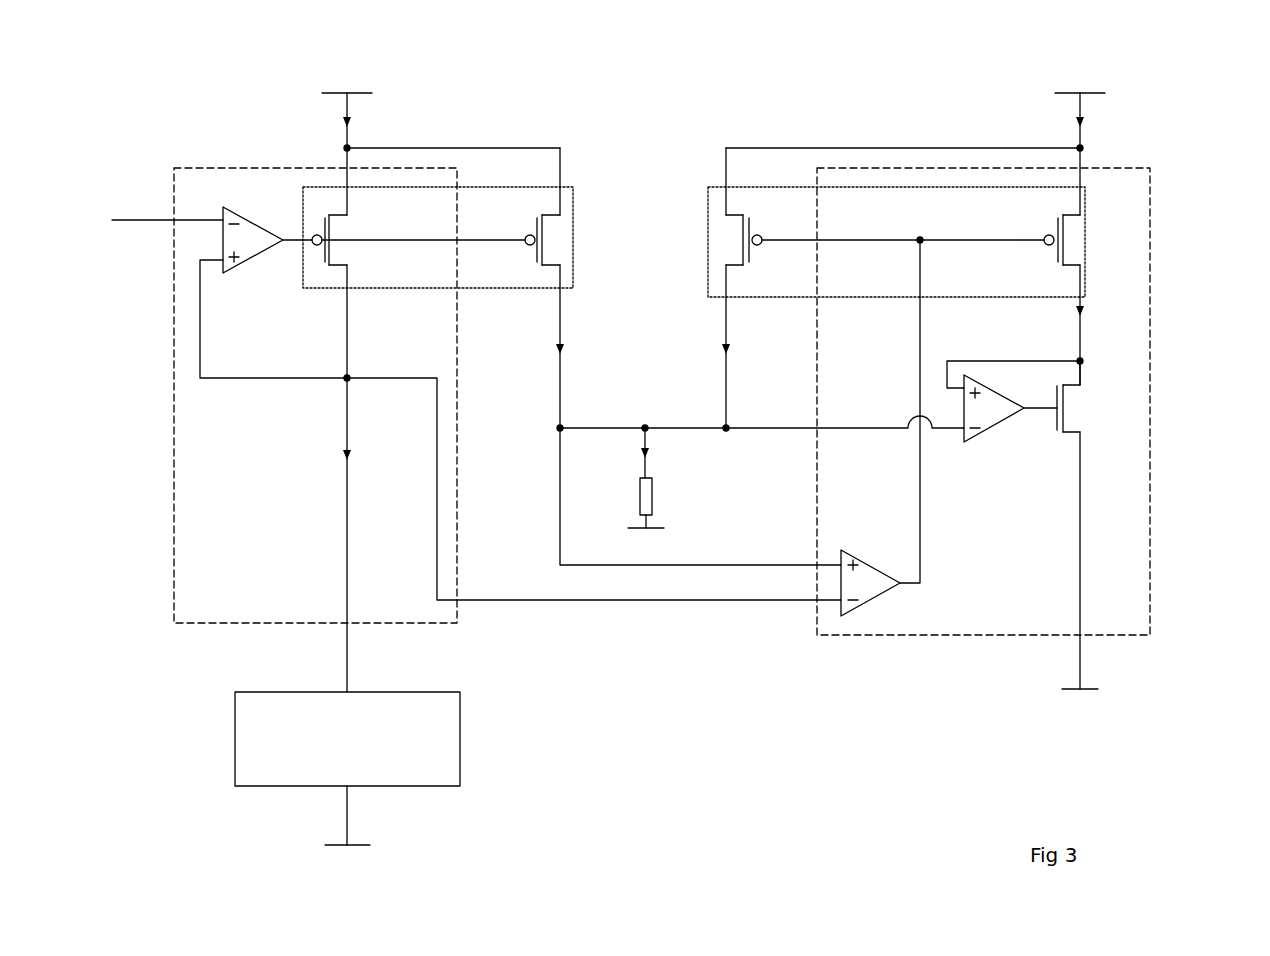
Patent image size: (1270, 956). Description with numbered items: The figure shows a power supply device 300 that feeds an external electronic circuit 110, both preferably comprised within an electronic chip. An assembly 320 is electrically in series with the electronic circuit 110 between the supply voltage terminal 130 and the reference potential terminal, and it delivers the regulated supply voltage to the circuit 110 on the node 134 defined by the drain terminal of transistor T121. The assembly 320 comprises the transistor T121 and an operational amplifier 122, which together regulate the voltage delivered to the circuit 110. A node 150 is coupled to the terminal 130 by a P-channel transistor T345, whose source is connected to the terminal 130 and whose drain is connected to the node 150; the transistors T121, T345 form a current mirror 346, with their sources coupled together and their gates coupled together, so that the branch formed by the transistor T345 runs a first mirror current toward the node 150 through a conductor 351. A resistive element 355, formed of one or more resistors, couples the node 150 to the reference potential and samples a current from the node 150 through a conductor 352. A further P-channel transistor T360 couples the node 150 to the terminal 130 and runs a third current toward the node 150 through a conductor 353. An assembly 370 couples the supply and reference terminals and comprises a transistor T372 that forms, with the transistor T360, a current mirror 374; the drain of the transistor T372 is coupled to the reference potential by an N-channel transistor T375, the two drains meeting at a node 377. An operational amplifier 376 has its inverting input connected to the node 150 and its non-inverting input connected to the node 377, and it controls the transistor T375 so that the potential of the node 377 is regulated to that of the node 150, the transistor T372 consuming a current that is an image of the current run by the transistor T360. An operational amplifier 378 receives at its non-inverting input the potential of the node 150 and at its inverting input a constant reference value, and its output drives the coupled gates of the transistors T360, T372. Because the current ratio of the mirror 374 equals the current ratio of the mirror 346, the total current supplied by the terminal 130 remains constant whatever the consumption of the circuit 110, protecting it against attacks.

The power supply device 300 is at (182, 108).
The assembly 320 is at (196, 168).
The current mirror 346 is at (410, 187).
The terminal of application of voltage VCC 130 is at (345, 105).
The operational amplifier 122 is at (268, 290).
The transistor T121 is at (314, 228).
The transistor T345 is at (548, 238).
The transistor T360 is at (738, 238).
The transistor T372 is at (1077, 229).
The transistor T375 is at (1068, 412).
The current mirror 374 is at (908, 187).
The assembly 370 is at (965, 637).
The node 377 is at (1086, 363).
The operational amplifier 376 is at (1000, 418).
The operational amplifier 378 is at (880, 588).
The conductor 351 is at (558, 397).
The conductor 353 is at (722, 325).
The node 150 is at (600, 428).
The conductor 352 is at (650, 443).
The resistive element 355 is at (655, 495).
The node 134 is at (350, 672).
The electronic circuit 110 is at (448, 766).